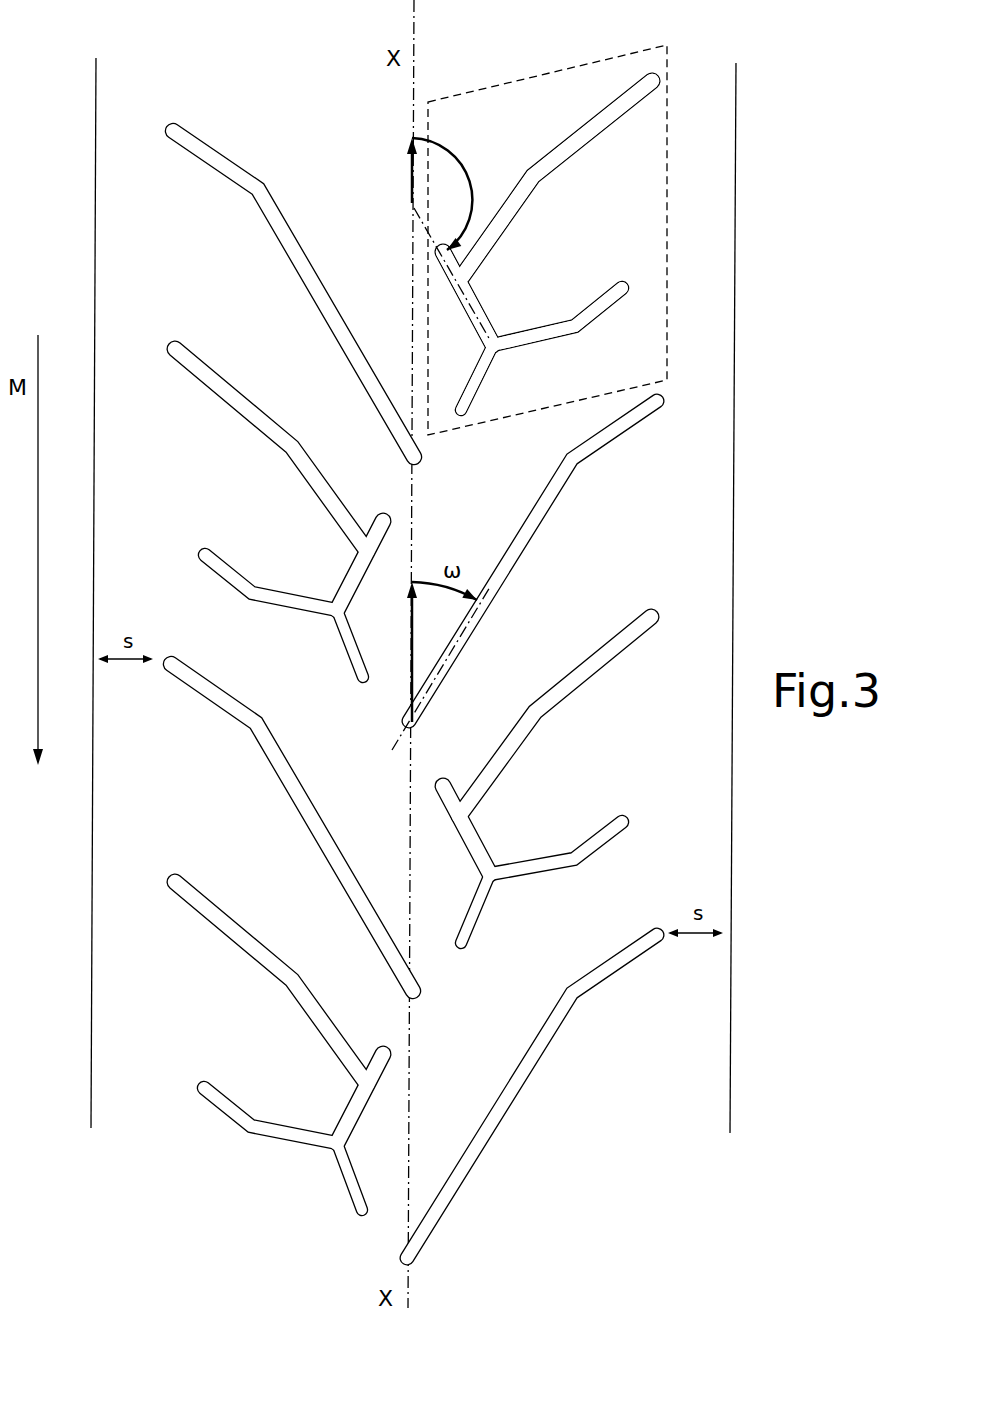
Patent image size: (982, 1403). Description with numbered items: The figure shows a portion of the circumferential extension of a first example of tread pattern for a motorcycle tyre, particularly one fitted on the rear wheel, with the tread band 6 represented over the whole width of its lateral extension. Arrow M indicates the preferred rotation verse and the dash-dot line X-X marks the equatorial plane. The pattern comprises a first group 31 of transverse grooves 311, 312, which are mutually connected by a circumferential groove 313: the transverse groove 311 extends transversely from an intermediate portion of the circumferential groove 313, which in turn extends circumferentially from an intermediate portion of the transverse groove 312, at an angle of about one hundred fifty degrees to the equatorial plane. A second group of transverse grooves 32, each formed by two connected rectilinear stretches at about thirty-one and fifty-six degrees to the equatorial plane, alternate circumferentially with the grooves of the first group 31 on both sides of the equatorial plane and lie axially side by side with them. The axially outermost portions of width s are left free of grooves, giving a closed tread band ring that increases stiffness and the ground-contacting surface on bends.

The tread band 6 is at (760, 132).
The first group of transverse grooves 31 is at (535, 240).
The transverse groove 311 is at (537, 177).
The transverse groove 312 is at (537, 340).
The circumferential groove 313 is at (477, 307).
The second group of transverse grooves 32 is at (550, 488).